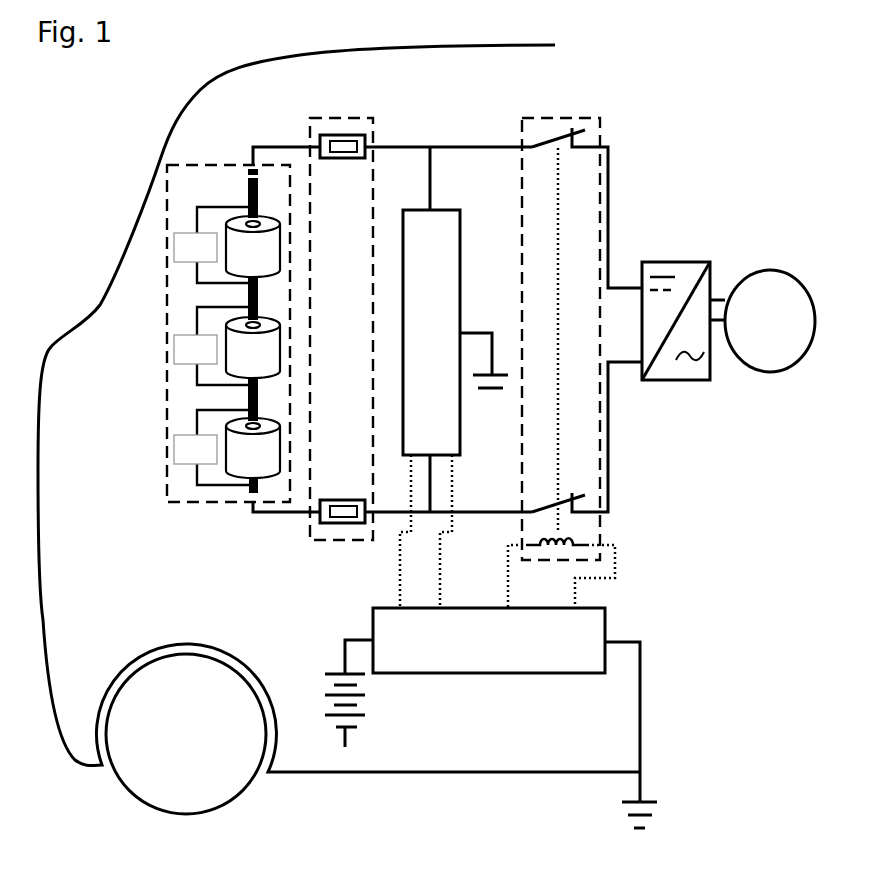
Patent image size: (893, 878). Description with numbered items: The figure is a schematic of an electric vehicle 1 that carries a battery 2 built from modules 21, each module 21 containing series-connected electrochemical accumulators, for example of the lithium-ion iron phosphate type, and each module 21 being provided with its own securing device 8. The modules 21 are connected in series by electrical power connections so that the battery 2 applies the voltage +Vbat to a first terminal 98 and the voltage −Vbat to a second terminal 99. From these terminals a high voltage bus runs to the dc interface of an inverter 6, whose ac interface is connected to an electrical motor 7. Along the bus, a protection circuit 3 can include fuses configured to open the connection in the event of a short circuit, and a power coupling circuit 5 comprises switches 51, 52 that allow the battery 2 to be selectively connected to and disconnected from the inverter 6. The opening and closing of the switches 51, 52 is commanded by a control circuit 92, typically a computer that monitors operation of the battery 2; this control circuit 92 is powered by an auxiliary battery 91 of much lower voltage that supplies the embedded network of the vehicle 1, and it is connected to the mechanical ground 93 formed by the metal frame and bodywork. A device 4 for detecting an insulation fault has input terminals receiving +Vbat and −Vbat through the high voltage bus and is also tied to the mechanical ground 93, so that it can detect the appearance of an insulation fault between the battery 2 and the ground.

The vehicle 1 is at (675, 172).
The battery 2 is at (198, 338).
The module 21 is at (240, 259).
The securing device 8 is at (203, 260).
The first terminal 98 is at (253, 165).
The second terminal 99 is at (253, 502).
The protection circuit 3 is at (343, 540).
The device for detecting an insulation fault 4 is at (422, 337).
The power coupling circuit 5 is at (564, 361).
The switch 51 is at (588, 133).
The switch 52 is at (588, 504).
The inverter 6 is at (676, 381).
The electrical motor 7 is at (762, 332).
The auxiliary battery 91 is at (325, 674).
The control circuit 92 is at (477, 641).
The mechanical ground 93 is at (490, 400).